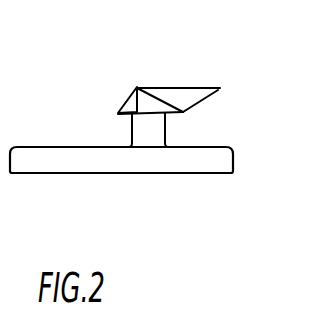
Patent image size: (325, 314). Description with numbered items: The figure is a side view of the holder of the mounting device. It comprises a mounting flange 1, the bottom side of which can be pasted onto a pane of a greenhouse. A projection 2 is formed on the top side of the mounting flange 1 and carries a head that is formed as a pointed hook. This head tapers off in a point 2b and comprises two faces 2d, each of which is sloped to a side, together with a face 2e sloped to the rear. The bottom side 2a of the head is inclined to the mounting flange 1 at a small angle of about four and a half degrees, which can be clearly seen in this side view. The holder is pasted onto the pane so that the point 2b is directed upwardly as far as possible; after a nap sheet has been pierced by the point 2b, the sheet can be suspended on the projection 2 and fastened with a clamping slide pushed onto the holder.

The mounting flange 1 is at (53, 156).
The projection 2 is at (150, 132).
The bottom side of the head 2a is at (157, 115).
The point 2b is at (218, 90).
The face sloped to a side 2d is at (178, 102).
The face sloped to the rear 2e is at (126, 104).